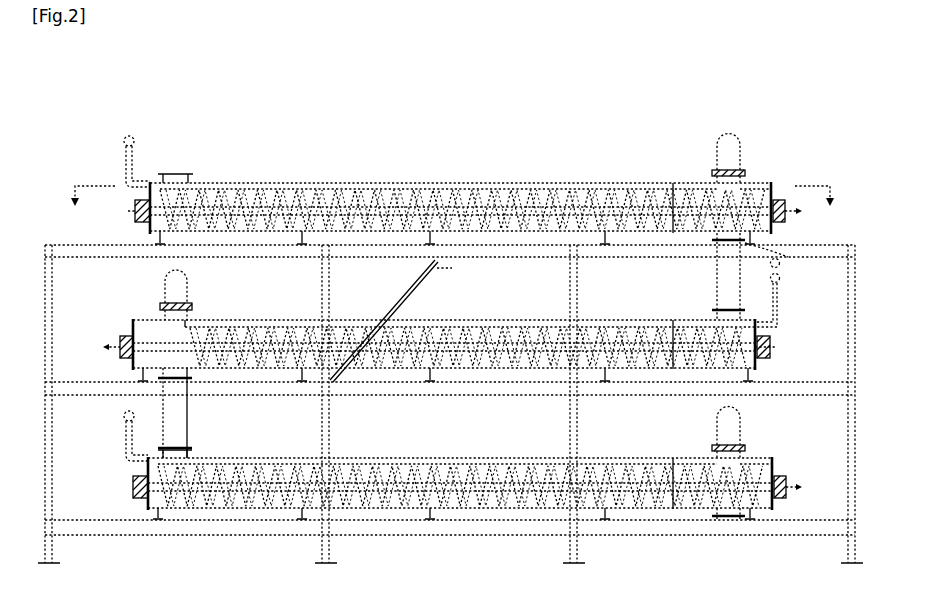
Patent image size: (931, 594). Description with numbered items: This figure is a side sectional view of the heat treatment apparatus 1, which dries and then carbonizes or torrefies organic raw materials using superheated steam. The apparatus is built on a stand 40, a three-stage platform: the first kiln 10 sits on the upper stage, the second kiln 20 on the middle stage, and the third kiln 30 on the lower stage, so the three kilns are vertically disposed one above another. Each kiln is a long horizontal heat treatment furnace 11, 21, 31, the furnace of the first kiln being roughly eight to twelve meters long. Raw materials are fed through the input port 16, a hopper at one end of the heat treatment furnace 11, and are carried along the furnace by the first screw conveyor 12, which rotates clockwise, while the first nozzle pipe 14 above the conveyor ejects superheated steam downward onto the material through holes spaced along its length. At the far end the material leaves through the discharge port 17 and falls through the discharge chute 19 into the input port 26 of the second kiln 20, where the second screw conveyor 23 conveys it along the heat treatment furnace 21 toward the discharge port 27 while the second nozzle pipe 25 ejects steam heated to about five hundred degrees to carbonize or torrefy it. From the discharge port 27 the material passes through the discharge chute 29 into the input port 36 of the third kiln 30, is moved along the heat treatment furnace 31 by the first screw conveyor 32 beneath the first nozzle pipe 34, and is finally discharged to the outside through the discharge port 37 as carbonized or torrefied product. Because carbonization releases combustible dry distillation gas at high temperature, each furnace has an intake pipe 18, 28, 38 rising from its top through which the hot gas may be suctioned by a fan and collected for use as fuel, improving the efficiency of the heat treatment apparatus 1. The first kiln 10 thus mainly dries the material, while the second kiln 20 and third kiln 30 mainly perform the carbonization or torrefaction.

The heat treatment apparatus 1 is at (625, 170).
The first kiln 10 is at (120, 174).
The heat treatment furnace 11 is at (468, 184).
The first screw conveyor 12 is at (296, 183).
The first nozzle pipe 14 is at (355, 187).
The input port 16 is at (173, 174).
The discharge port 17 is at (790, 257).
The intake pipe 18 is at (742, 176).
The discharge chute 19 is at (722, 292).
The second kiln 20 is at (91, 321).
The heat treatment furnace 21 is at (290, 320).
The second screw conveyor 23 is at (540, 327).
The second nozzle pipe 25 is at (472, 320).
The input port 26 is at (771, 330).
The discharge port 27 is at (150, 340).
The intake pipe 28 is at (188, 297).
The discharge chute 29 is at (189, 408).
The third kiln 30 is at (104, 475).
The heat treatment furnace 31 is at (613, 460).
The first screw conveyor 32 is at (522, 462).
The first nozzle pipe 34 is at (365, 462).
The input port 36 is at (191, 460).
The discharge port 37 is at (727, 521).
The intake pipe 38 is at (736, 425).
The stand 40 is at (163, 527).